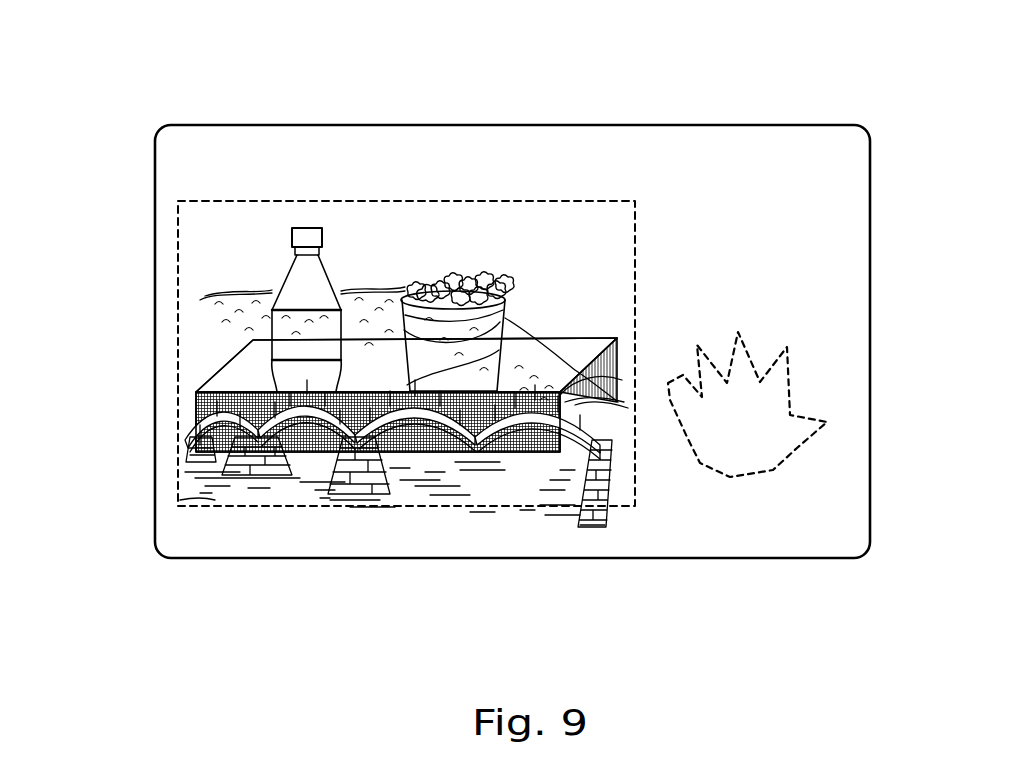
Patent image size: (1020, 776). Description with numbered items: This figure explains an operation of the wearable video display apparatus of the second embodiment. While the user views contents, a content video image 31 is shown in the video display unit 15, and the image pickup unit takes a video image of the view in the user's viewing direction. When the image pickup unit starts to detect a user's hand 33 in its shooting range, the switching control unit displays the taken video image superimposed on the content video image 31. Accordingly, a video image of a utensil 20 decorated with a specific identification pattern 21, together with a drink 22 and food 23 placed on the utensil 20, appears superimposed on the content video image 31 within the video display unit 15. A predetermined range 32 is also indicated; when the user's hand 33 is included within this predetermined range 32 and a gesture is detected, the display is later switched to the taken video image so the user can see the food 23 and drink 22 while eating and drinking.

The video display unit 15 is at (804, 124).
The utensil 20 is at (227, 365).
The specific identification pattern 21 is at (205, 398).
The drink 22 is at (287, 270).
The food 23 is at (461, 275).
The content video image 31 is at (362, 273).
The predetermined range 32 is at (178, 468).
The user's hand 33 is at (773, 470).